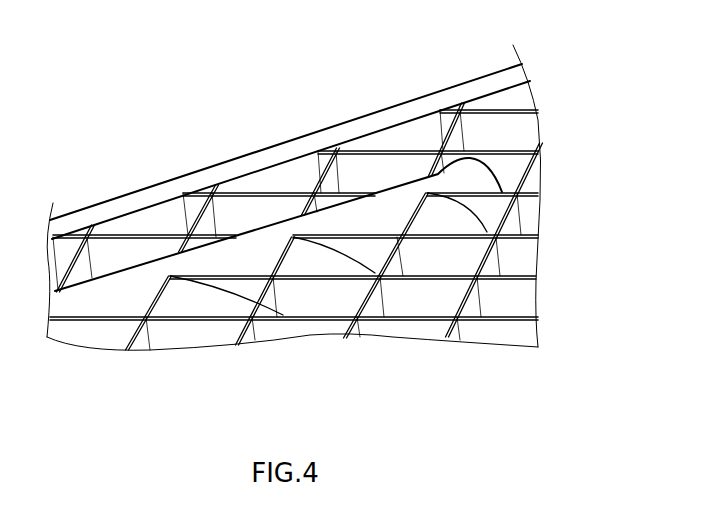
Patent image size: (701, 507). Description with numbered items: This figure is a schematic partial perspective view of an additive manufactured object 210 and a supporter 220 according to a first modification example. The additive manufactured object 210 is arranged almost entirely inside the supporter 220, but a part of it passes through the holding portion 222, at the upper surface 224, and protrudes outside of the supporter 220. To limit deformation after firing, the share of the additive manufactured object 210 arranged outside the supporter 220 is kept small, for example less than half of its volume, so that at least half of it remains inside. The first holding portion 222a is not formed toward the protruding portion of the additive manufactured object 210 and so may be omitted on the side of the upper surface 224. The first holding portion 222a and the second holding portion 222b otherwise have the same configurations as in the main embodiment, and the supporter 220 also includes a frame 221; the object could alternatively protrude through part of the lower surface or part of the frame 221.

The additive manufactured object 210 is at (257, 240).
The supporter 220 is at (366, 107).
The frame 221 is at (477, 93).
The holding portion 222 is at (355, 215).
The first holding portion 222a is at (488, 208).
The second holding portion 222b is at (523, 122).
The upper surface 224 is at (113, 235).